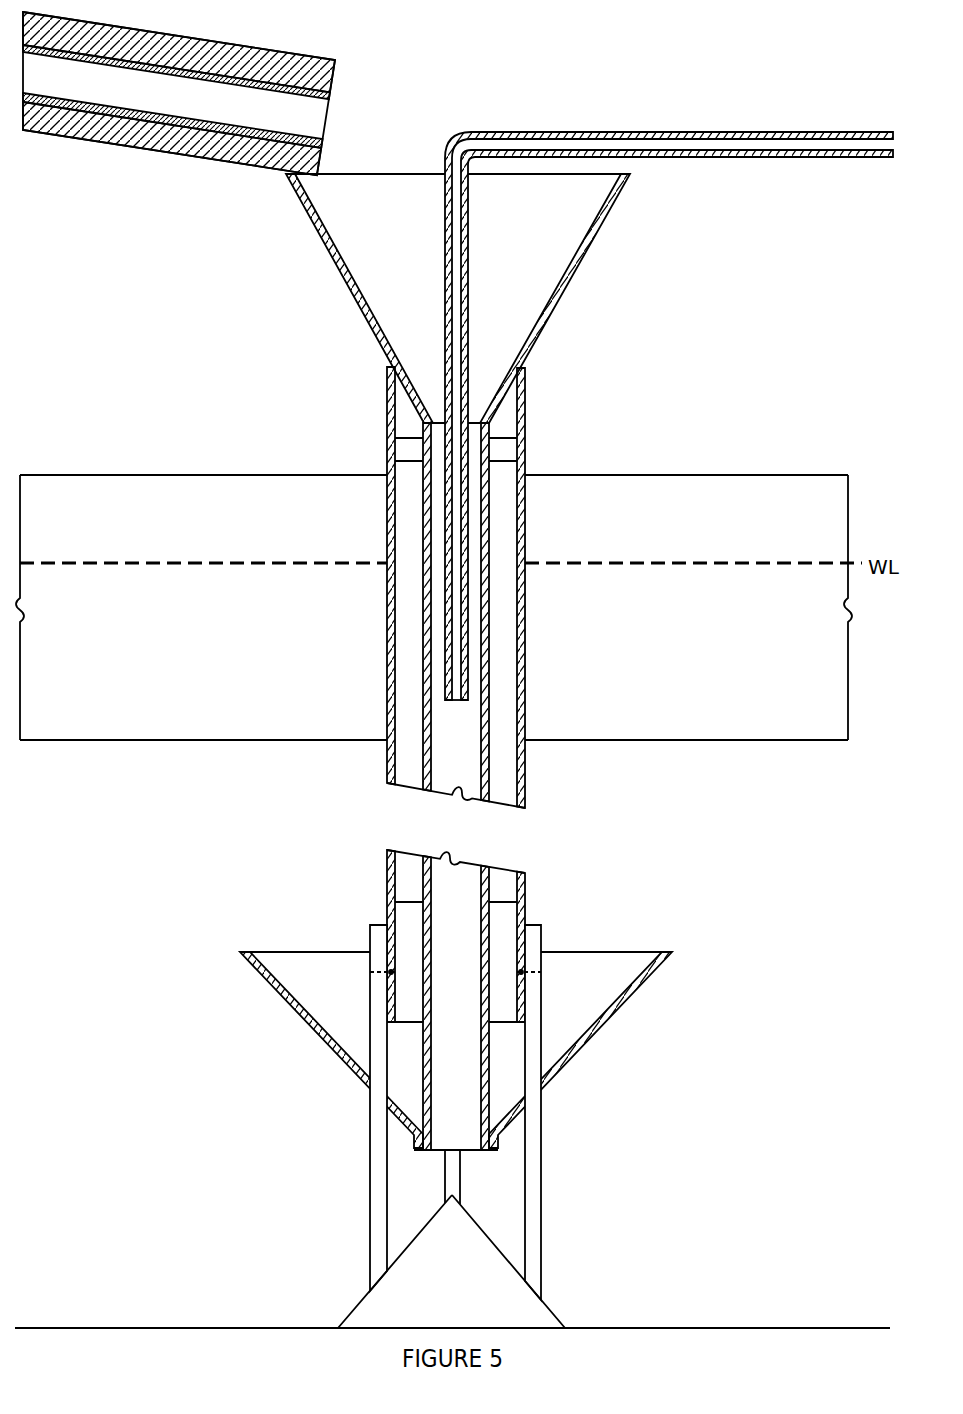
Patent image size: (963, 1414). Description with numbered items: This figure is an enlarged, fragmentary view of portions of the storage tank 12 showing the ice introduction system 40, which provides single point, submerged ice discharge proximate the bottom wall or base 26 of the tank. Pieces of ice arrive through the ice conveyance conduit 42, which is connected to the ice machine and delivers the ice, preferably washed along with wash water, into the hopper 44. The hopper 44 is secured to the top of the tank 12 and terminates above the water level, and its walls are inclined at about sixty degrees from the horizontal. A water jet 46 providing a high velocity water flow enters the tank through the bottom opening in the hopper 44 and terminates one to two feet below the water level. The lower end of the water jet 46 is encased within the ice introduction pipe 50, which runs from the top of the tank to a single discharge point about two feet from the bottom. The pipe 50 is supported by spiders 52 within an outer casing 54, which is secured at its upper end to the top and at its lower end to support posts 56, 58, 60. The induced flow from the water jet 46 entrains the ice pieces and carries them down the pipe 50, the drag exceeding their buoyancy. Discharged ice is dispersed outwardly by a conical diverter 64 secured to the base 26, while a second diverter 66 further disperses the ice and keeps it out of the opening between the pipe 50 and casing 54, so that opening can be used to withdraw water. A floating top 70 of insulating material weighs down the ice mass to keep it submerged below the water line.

The storage tank 12 is at (448, 576).
The bottom wall or base 26 is at (618, 1326).
The ice introduction system 40 is at (566, 716).
The ice conveyance conduit 42 is at (185, 156).
The hopper 44 is at (338, 272).
The water jet 46 is at (470, 259).
The ice introduction pipe 50 is at (524, 775).
The spiders 52 is at (502, 449).
The outer casing 54 is at (524, 911).
The support post 56 is at (376, 1183).
The support post 58 is at (533, 1184).
The support post 60 is at (452, 1185).
The conical diverter 64 is at (365, 1297).
The second diverter 66 is at (312, 1037).
The floating top 70 is at (848, 426).